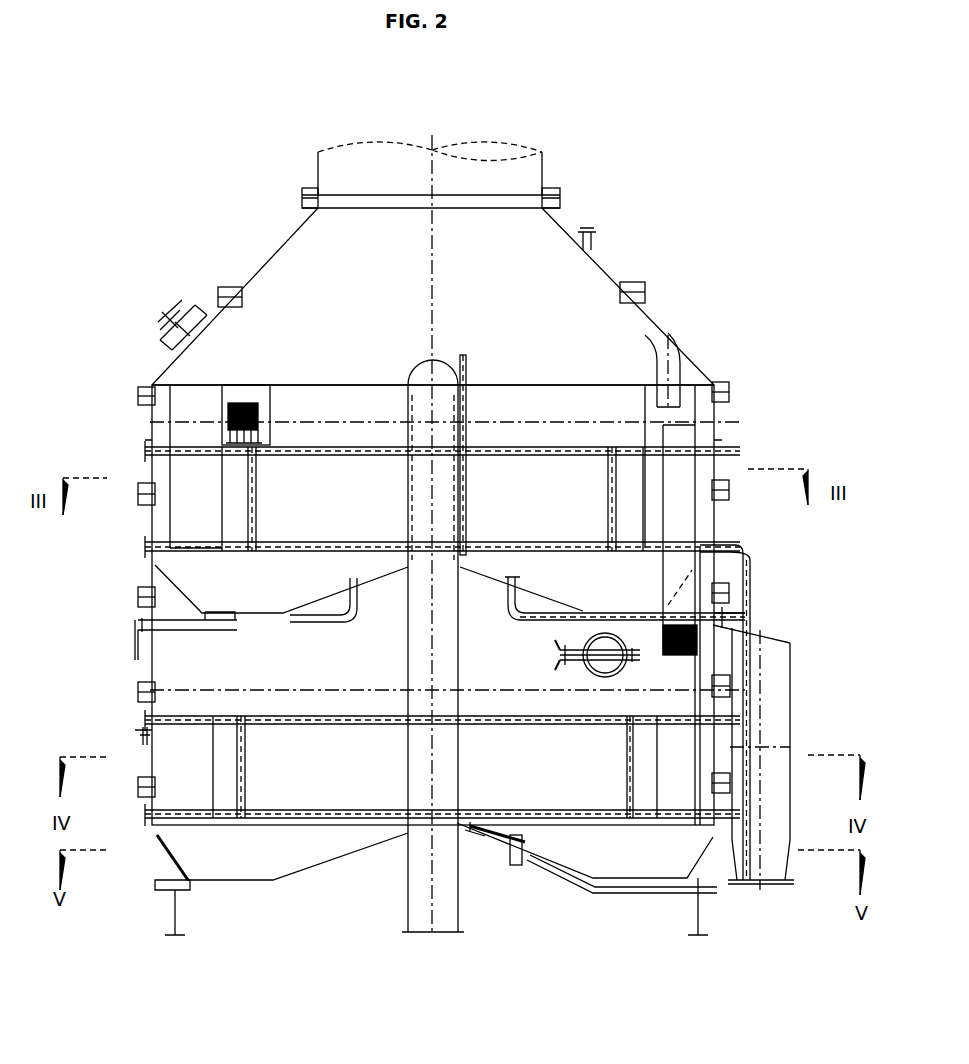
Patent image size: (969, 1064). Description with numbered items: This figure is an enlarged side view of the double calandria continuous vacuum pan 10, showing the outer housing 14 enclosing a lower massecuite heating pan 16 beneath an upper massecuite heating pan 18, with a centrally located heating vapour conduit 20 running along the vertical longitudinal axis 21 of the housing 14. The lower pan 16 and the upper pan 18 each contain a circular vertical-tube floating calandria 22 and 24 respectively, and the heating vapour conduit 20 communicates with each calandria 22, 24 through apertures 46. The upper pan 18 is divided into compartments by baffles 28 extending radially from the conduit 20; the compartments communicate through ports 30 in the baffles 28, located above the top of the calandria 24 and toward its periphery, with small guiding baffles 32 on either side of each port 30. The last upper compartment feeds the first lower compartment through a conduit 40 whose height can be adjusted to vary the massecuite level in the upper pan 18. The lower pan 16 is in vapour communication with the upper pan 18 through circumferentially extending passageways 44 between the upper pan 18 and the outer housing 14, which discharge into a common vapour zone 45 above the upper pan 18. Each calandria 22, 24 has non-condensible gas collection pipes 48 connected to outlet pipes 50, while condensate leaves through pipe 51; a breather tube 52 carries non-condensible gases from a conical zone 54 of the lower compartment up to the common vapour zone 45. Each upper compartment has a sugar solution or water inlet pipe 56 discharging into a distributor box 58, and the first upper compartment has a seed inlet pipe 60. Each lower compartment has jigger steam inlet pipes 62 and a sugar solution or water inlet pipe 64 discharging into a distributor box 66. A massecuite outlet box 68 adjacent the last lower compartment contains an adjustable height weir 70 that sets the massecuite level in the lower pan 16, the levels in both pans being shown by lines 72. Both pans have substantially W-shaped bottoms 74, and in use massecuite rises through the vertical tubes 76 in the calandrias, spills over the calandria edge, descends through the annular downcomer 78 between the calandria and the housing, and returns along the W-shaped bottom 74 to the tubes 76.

The double calandria continuous vacuum pan 10 is at (643, 252).
The outer housing 14 is at (716, 425).
The lower massecuite heating pan 16 is at (698, 753).
The upper massecuite heating pan 18 is at (695, 520).
The heating vapour conduit 20 is at (410, 908).
The vertical longitudinal axis 21 is at (432, 278).
The floating calandria 22 is at (530, 716).
The floating calandria 24 is at (545, 452).
The baffles 28 is at (330, 385).
The ports 30 is at (242, 400).
The guiding baffles 32 is at (272, 402).
The conduit 40 is at (720, 455).
The passageways 44 is at (150, 440).
The common vapour zone 45 is at (297, 288).
The apertures 46 is at (408, 518).
The non-condensible gas collection pipes 48 is at (238, 548).
The outlet pipes 50 is at (193, 452).
The pipe 51 is at (752, 582).
The breather tube 52 is at (466, 365).
The conical zone 54 is at (498, 603).
The pipe 56 is at (745, 617).
The distributor box 58 is at (520, 577).
The pipe 60 is at (648, 335).
The pipes 62 is at (505, 838).
The pipe 64 is at (517, 867).
The distributor box 66 is at (530, 836).
The massecuite outlet box 68 is at (793, 700).
The adjustable height weir 70 is at (745, 665).
The lines 72 is at (555, 420).
The W-shaped bottoms 74 is at (258, 620).
The vertical tubes 76 is at (628, 785).
The downcomer 78 is at (722, 410).